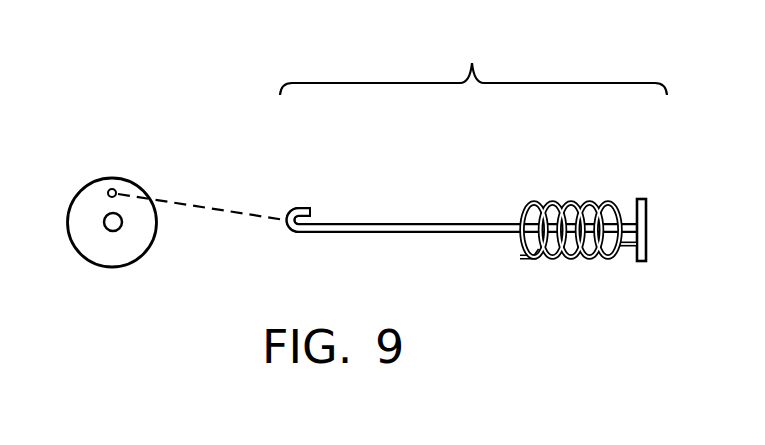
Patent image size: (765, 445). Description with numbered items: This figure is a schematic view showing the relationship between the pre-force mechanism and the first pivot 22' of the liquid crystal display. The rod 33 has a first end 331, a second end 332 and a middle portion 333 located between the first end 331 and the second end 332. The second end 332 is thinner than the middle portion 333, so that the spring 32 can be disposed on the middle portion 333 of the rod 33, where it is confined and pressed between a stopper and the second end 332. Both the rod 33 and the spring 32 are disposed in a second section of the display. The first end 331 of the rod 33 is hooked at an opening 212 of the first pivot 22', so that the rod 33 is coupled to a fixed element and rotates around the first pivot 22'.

The first pivot 22' is at (102, 177).
The opening 212 is at (112, 189).
The rod 33 is at (473, 64).
The first end 331 is at (302, 207).
The second end 332 is at (640, 198).
The middle portion 333 is at (460, 223).
The spring 32 is at (568, 258).